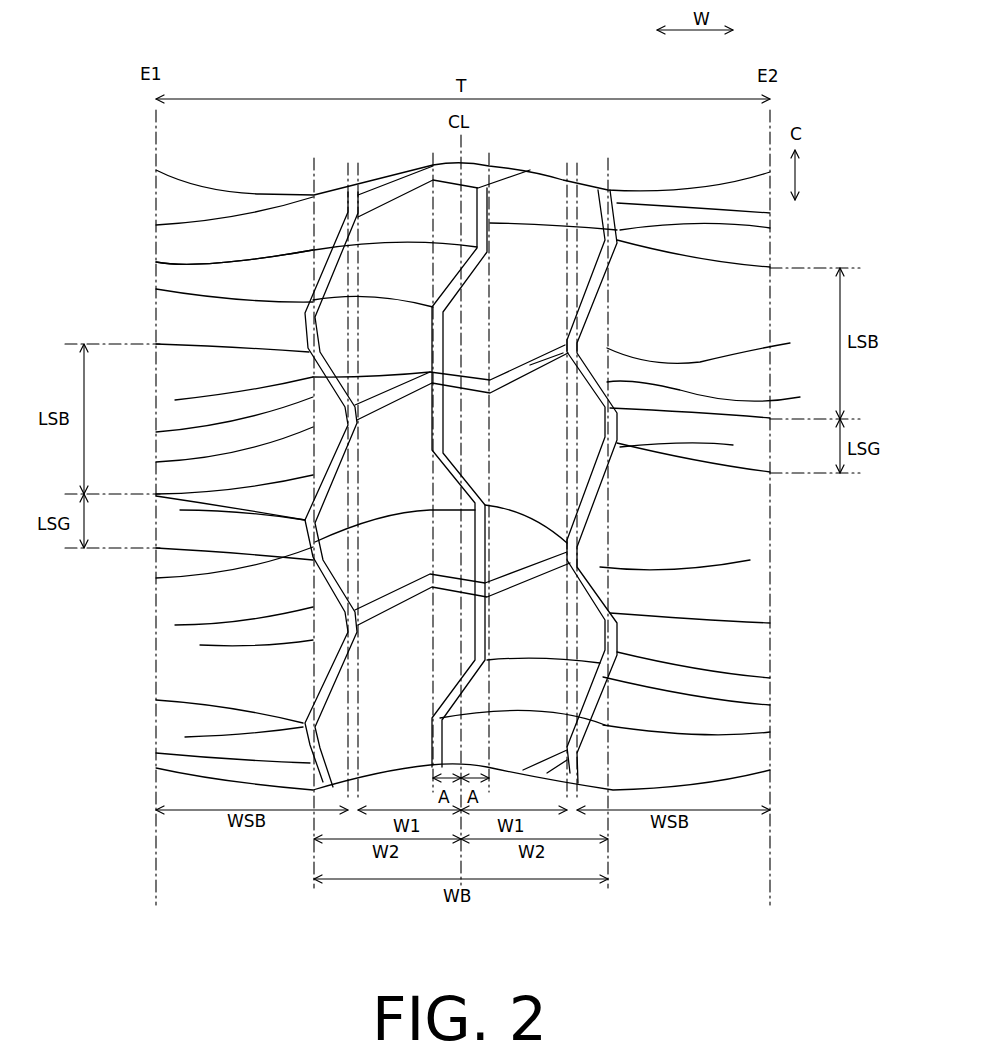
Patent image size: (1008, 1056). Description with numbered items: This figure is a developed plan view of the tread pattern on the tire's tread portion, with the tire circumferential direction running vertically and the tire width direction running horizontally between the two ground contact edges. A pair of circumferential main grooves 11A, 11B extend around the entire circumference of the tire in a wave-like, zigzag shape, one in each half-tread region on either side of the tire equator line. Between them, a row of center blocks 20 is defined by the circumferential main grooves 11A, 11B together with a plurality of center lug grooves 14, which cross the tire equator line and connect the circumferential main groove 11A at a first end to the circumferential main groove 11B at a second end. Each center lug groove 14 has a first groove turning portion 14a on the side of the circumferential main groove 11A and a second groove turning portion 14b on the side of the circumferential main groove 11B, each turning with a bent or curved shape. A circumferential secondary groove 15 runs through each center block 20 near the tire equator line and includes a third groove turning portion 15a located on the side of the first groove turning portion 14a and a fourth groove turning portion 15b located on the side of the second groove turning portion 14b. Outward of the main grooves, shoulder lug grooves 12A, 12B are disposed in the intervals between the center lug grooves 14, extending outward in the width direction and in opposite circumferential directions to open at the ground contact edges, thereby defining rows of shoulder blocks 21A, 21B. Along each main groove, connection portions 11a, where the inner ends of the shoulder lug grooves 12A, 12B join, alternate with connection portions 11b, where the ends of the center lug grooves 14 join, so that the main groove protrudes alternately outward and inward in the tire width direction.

The center block 20 is at (407, 220).
The shoulder block 21A is at (160, 195).
The shoulder block 21B is at (710, 327).
The circumferential main groove 11A is at (175, 400).
The circumferential main groove 11B is at (721, 395).
The connection portion 11a is at (185, 737).
The connection portion 11b is at (175, 625).
The shoulder lug groove 12A is at (200, 316).
The shoulder lug groove 12B is at (740, 662).
The center lug groove 14 is at (156, 225).
The first groove turning portion 14a is at (156, 432).
The second groove turning portion 14b is at (156, 462).
The circumferential secondary groove 15 is at (770, 228).
The third groove turning portion 15a is at (156, 289).
The fourth groove turning portion 15b is at (156, 262).